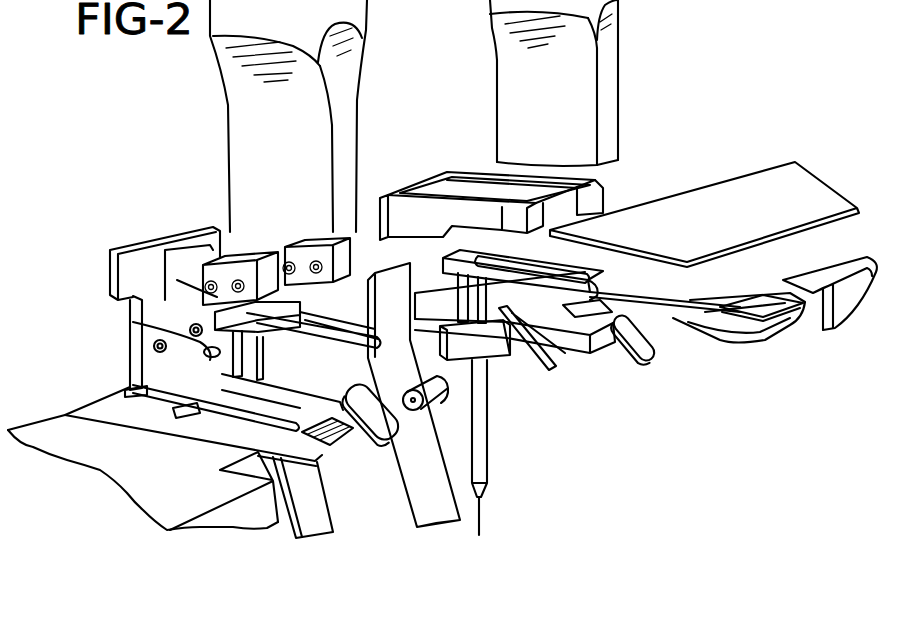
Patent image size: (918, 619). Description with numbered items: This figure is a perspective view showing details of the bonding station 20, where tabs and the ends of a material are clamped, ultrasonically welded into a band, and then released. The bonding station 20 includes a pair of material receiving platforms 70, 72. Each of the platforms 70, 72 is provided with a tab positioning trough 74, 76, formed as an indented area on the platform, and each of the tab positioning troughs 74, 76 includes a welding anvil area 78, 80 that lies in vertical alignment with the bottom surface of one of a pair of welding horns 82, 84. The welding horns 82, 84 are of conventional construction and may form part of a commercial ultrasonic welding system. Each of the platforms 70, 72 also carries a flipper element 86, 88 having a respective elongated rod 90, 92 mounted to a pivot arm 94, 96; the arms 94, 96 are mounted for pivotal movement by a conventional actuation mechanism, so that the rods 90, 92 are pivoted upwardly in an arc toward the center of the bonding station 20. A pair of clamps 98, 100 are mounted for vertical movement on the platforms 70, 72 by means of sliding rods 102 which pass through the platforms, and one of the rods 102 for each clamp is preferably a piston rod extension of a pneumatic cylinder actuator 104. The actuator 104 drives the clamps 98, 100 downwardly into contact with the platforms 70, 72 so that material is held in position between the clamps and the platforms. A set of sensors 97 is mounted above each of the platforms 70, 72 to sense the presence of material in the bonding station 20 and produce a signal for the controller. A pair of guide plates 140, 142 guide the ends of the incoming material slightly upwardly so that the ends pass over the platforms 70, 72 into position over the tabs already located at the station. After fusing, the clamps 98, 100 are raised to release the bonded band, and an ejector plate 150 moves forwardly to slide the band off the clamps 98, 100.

The bonding station 20 is at (587, 403).
The material receiving platform 70 is at (755, 323).
The material receiving platform 72 is at (177, 430).
The tab positioning trough 74 is at (645, 316).
The tab positioning trough 76 is at (137, 428).
The welding anvil area 78 is at (598, 345).
The welding anvil area 80 is at (313, 407).
The welding horn 82 is at (587, 90).
The welding horn 84 is at (229, 117).
The flipper element 86 is at (485, 189).
The flipper element 88 is at (128, 372).
The elongated rod 90 is at (605, 318).
The elongated rod 92 is at (247, 427).
The pivot arm 94 is at (410, 245).
The pivot arm 96 is at (128, 390).
The sensors 97 is at (292, 262).
The clamp 98 is at (565, 275).
The clamp 100 is at (228, 303).
The sliding rod 102 is at (230, 362).
The pneumatic cylinder actuator 104 is at (483, 418).
The guide plate 140 is at (680, 342).
The guide plate 142 is at (385, 443).
The ejector plate 150 is at (447, 513).